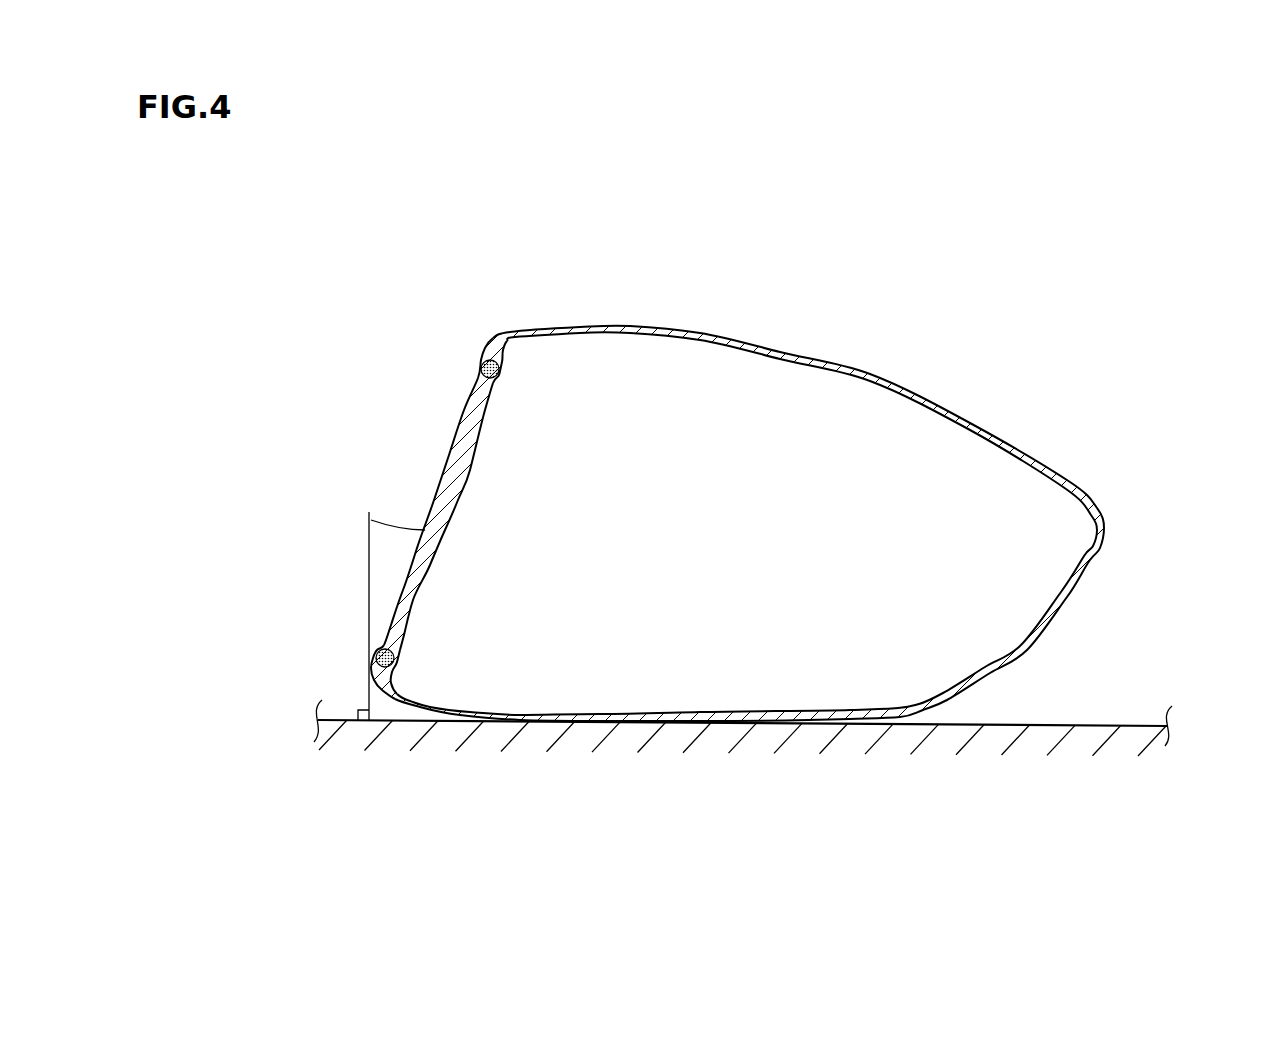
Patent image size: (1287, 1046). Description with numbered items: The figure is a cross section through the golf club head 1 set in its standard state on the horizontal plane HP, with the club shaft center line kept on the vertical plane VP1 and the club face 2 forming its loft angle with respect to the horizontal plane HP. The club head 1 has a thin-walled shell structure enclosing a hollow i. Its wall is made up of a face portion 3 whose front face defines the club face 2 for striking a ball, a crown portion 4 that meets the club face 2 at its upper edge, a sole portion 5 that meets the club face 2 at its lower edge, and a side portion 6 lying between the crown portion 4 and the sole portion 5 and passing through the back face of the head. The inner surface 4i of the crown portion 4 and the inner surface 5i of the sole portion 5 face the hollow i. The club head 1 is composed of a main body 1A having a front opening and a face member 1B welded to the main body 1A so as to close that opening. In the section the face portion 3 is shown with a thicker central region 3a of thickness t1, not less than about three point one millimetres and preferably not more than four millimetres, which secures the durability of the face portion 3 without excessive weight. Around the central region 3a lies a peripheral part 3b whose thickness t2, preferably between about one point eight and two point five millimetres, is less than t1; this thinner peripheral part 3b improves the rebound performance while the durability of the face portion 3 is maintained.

The golf club head 1 is at (790, 471).
The main body 1A is at (798, 376).
The face member 1B is at (467, 514).
The club face 2 is at (468, 403).
The face portion 3 is at (474, 501).
The central region 3a is at (466, 462).
The peripheral part 3b is at (494, 400).
The crown portion 4 is at (798, 389).
The inner surface of tread 4i is at (683, 341).
The sole portion 5 is at (765, 749).
The inner surface of flattened sidewall 5i is at (568, 712).
The side portion 6 is at (1085, 578).
The thickness of central region t1 is at (408, 473).
The thickness of peripheral part t2 is at (447, 373).
The vertical plane VP1 is at (368, 543).
The horizontal plane HP is at (1100, 725).
The hollow i is at (724, 550).